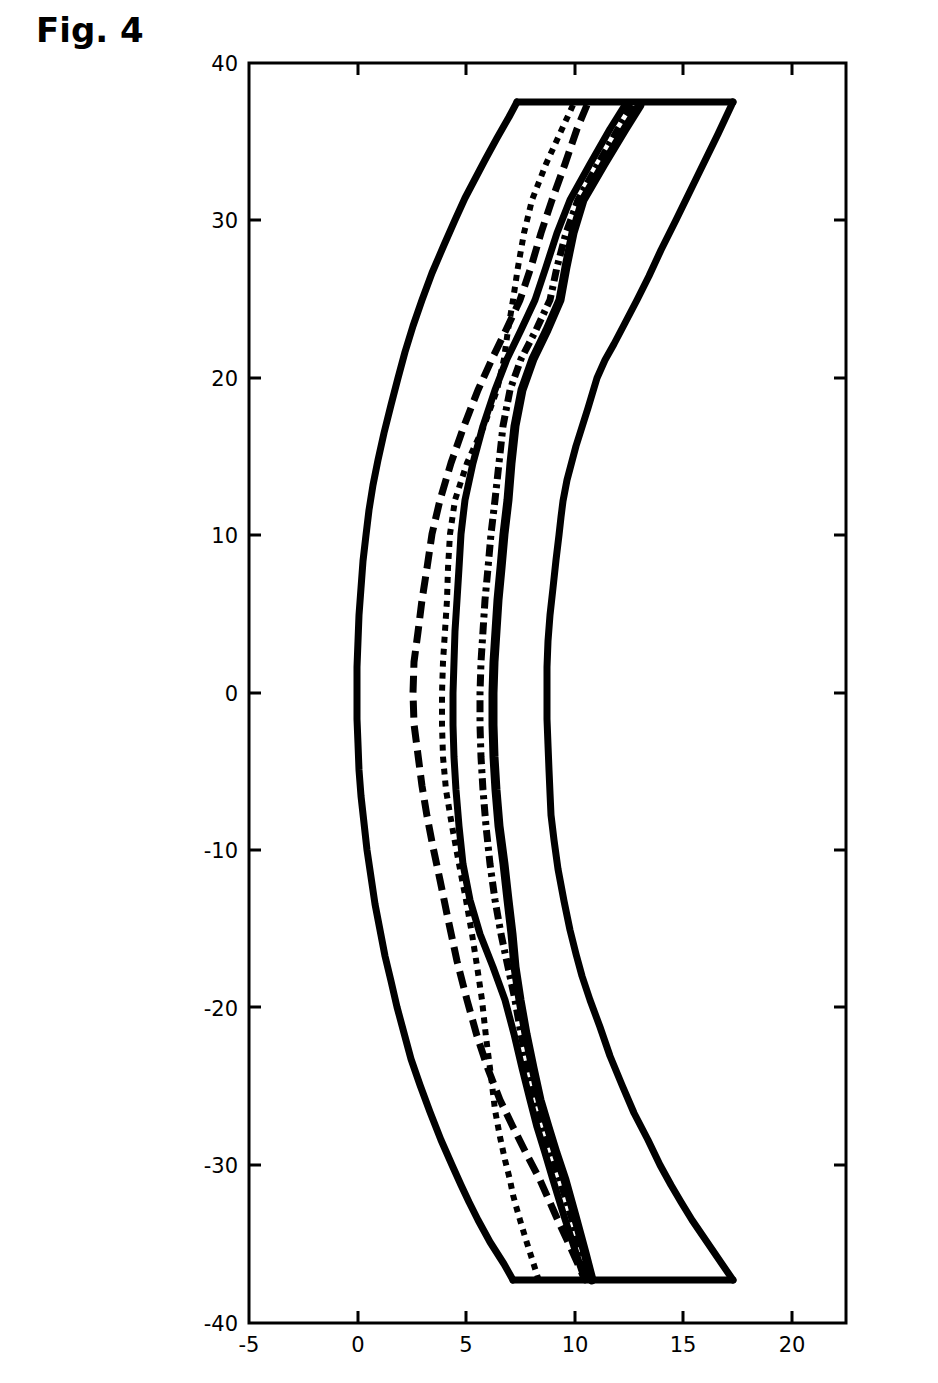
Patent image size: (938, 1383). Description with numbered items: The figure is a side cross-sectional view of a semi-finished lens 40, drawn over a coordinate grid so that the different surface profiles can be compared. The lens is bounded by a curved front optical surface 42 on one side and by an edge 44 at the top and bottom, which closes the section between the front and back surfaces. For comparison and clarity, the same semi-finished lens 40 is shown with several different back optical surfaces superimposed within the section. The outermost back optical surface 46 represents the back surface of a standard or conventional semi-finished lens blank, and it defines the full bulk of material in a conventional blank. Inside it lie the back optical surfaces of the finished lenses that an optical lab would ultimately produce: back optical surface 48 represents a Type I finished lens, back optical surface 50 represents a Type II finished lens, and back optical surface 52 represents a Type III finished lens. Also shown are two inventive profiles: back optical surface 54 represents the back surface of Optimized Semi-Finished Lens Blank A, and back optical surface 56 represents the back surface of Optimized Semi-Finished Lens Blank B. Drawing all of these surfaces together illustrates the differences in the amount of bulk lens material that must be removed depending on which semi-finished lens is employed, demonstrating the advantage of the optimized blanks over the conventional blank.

The semi-finished lens 40 is at (677, 413).
The front optical surface 42 is at (353, 745).
The edge 44 is at (693, 96).
The back optical surface 46 is at (560, 848).
The back optical surface 48 is at (438, 466).
The back optical surface 50 is at (447, 523).
The back optical surface 52 is at (487, 465).
The back optical surface 54 is at (450, 638).
The back optical surface 56 is at (503, 512).